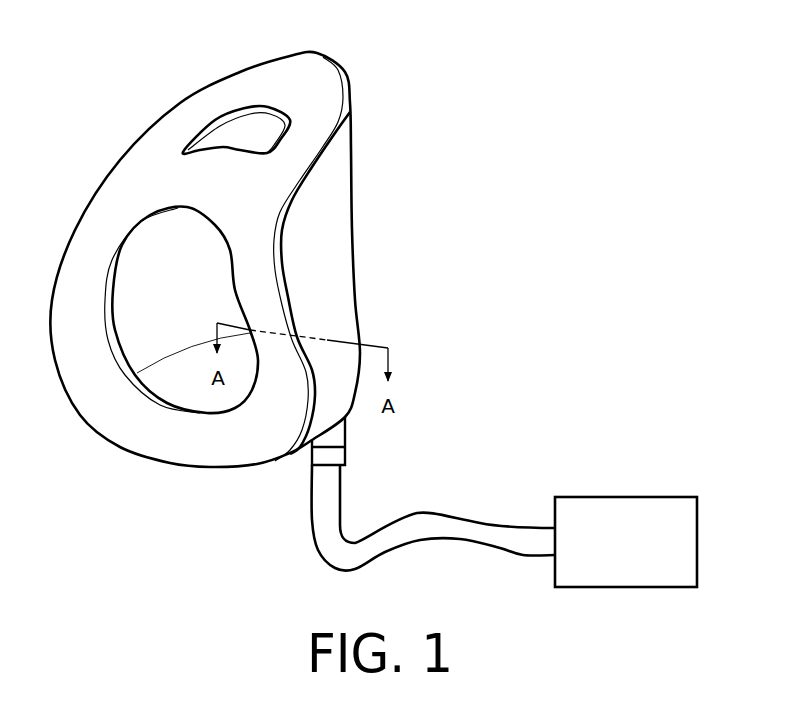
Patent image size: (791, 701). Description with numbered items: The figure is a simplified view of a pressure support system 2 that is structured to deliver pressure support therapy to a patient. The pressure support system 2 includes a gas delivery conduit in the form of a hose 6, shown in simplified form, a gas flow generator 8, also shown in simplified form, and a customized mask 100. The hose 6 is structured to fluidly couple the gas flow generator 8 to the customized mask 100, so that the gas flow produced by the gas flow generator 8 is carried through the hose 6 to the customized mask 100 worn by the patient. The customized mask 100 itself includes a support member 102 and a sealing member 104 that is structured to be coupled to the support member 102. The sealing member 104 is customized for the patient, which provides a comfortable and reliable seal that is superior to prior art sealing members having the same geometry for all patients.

The pressure support system 2 is at (652, 152).
The hose 6 is at (447, 513).
The gas flow generator 8 is at (625, 497).
The customized mask 100 is at (395, 144).
The support member 102 is at (337, 230).
The sealing member 104 is at (283, 75).